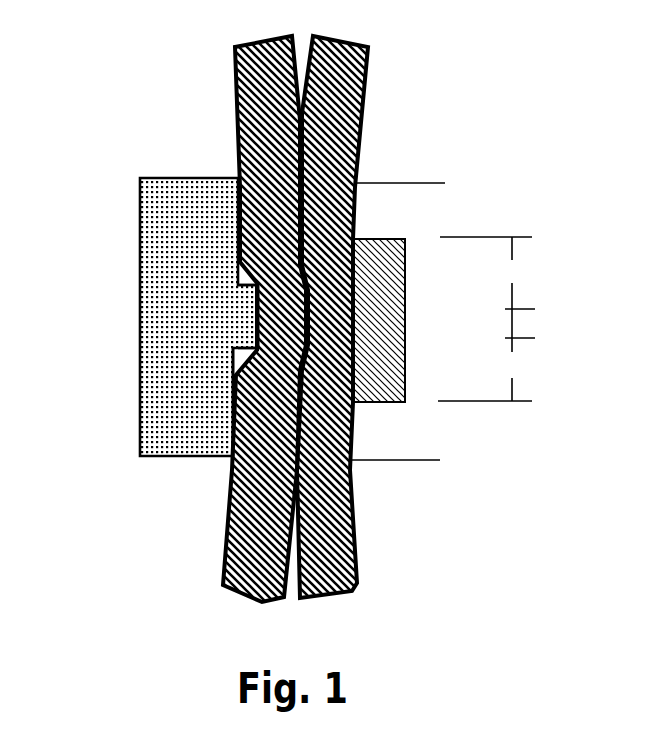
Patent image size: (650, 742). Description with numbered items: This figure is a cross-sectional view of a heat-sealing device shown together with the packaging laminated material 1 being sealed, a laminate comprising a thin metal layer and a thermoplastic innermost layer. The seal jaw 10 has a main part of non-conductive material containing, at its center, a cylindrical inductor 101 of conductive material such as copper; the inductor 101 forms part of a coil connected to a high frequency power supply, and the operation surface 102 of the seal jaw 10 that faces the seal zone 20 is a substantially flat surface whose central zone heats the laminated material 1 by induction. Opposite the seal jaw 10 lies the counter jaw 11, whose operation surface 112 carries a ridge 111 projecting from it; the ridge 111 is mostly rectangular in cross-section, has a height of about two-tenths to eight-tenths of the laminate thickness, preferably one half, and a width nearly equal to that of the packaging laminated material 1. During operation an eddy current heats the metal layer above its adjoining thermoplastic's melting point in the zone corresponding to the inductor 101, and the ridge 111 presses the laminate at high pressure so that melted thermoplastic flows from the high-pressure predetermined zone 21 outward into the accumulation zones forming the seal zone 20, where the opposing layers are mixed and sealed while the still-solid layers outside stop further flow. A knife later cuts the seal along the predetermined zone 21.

The packaging laminated material 1 is at (232, 520).
The seal jaw 10 is at (420, 170).
The counter jaw 11 is at (156, 175).
The ridge 111 is at (255, 312).
The operation surface 112 is at (250, 388).
The inductor 101 is at (405, 324).
The operation surface 102 is at (352, 417).
The seal zone 20 is at (486, 319).
The predetermined zone 21 is at (530, 325).